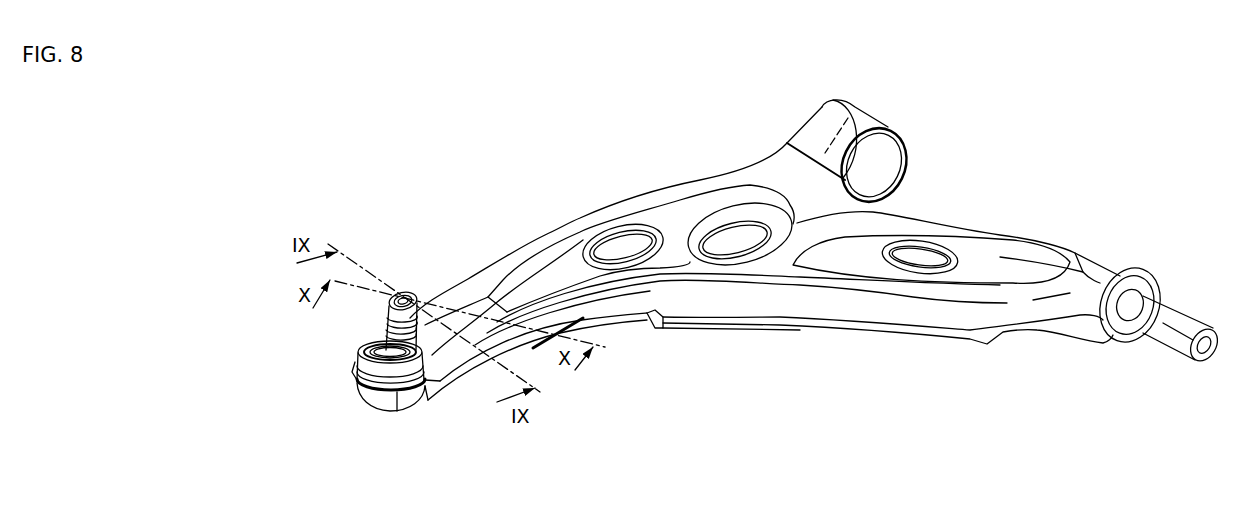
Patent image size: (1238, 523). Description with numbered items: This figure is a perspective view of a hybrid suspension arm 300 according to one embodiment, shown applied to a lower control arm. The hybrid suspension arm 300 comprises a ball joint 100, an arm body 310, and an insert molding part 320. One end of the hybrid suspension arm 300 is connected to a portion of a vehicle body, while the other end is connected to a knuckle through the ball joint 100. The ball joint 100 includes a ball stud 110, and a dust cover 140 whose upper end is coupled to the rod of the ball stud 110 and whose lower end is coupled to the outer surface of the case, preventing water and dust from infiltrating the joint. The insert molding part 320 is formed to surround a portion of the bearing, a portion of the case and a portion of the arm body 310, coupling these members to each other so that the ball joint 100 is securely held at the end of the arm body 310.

The ball joint 100 is at (338, 368).
The ball stud 110 is at (370, 319).
The dust cover 140 is at (363, 348).
The hybrid suspension arm 300 is at (538, 127).
The arm body 310 is at (472, 279).
The insert molding part 320 is at (453, 397).